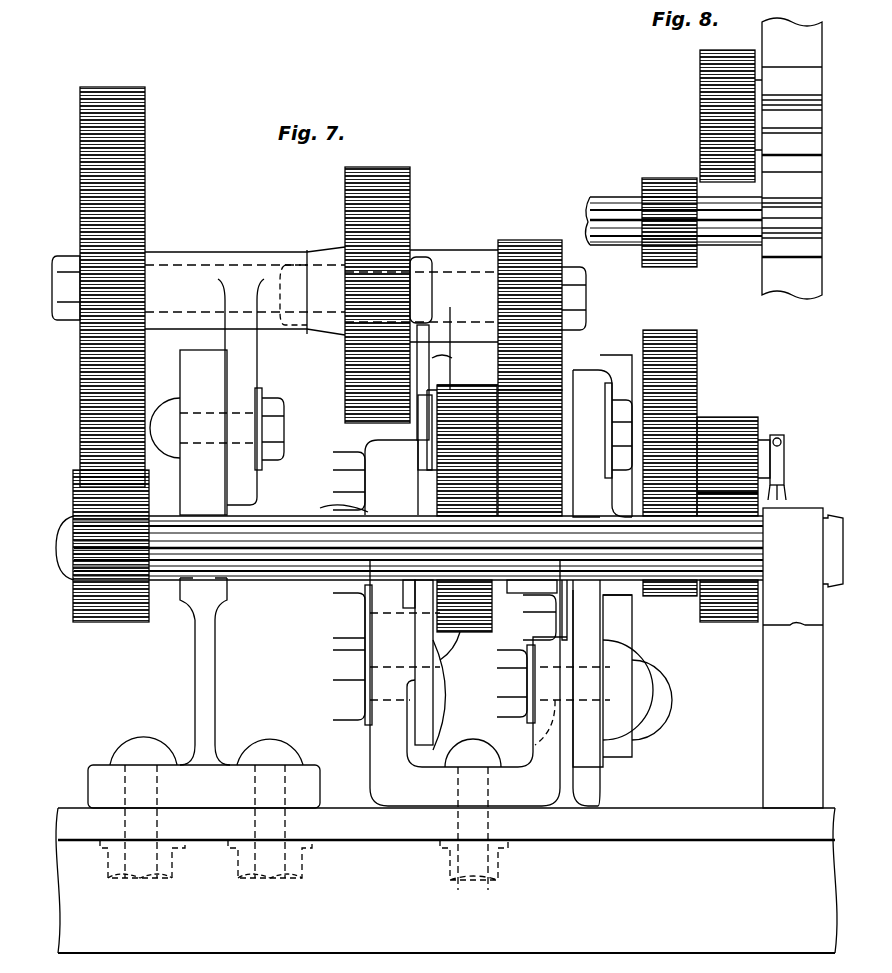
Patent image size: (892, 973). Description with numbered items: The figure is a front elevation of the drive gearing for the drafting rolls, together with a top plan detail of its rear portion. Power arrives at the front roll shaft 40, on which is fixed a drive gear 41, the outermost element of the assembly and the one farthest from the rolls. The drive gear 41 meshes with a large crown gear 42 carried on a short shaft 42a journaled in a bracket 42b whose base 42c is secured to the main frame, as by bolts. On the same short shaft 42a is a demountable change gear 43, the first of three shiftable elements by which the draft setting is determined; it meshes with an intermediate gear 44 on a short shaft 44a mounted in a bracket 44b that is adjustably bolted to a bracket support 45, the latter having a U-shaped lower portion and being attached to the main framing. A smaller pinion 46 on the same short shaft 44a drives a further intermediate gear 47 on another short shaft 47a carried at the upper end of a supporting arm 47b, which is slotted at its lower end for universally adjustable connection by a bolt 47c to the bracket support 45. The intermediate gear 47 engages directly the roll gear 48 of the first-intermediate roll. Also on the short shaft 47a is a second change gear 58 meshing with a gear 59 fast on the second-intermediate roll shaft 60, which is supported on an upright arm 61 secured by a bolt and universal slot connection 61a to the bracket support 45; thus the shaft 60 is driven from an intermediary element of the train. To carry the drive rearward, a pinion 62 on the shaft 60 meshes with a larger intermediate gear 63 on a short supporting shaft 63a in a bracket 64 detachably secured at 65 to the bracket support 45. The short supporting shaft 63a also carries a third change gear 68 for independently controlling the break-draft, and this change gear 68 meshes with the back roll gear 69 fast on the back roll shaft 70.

In FIG. 7, the front roll shaft 40 is at (606, 536).
In FIG. 7, the drive gear 41 is at (118, 612).
In FIG. 7, the crown gear 42 is at (132, 152).
In FIG. 7, the short shaft 42a is at (178, 265).
In FIG. 7, the bracket 42b is at (255, 371).
In FIG. 7, the base 42c is at (208, 695).
In FIG. 7, the change gear 43 is at (398, 262).
In FIG. 7, the intermediate gear 44 is at (345, 184).
In FIG. 7, the short shaft 44a is at (456, 270).
In FIG. 7, the bracket 44b is at (457, 373).
In FIG. 7, the bracket support 45 is at (380, 744).
In FIG. 7, the pinion 46 is at (528, 250).
In FIG. 7, the intermediate gear 47 is at (542, 376).
In FIG. 7, the short shaft 47a is at (415, 434).
In FIG. 7, the supporting arm 47b is at (630, 745).
In FIG. 7, the bolt 47c is at (487, 763).
In FIG. 7, the roll gear 48 is at (520, 582).
In FIG. 7, the second change gear 58 is at (452, 452).
In FIG. 7, the gear 59 is at (480, 632).
In FIG. 8, the second-intermediate roll shaft 60 is at (608, 204).
In FIG. 7, the upright arm 61 is at (340, 515).
In FIG. 7, the bolt and universal slot connection 61a is at (440, 700).
In FIG. 7, the pinion 62 is at (678, 594).
In FIG. 8, the pinion 62 is at (663, 182).
In FIG. 7, the intermediate gear 63 is at (683, 366).
In FIG. 7, the short supporting shaft 63a is at (780, 466).
In FIG. 7, the bracket 64 is at (614, 356).
In FIG. 7, the securing point 65 is at (648, 708).
In FIG. 7, the third change gear 68 is at (728, 418).
In FIG. 7, the back roll gear 69 is at (736, 622).
In FIG. 8, the back roll gear 69 is at (718, 98).
In FIG. 8, the back roll shaft 70 is at (790, 92).